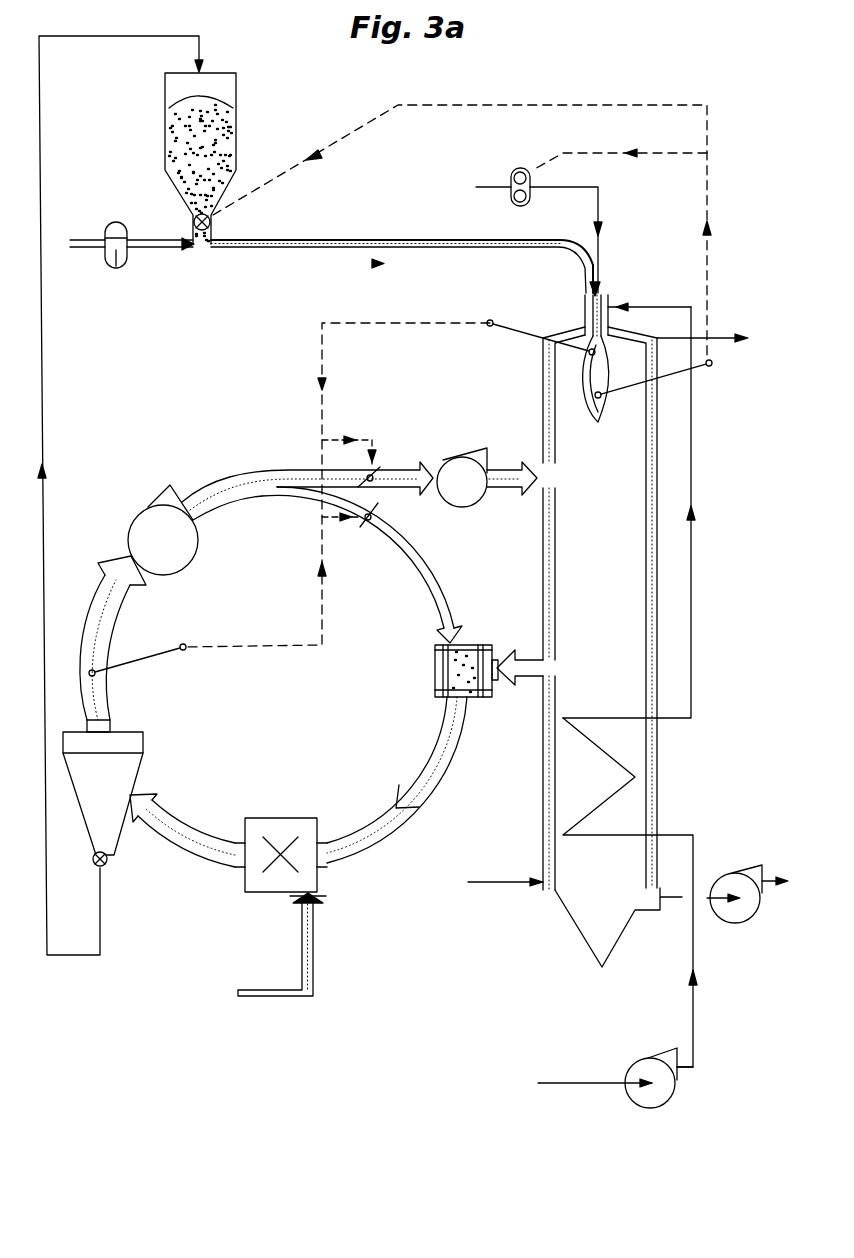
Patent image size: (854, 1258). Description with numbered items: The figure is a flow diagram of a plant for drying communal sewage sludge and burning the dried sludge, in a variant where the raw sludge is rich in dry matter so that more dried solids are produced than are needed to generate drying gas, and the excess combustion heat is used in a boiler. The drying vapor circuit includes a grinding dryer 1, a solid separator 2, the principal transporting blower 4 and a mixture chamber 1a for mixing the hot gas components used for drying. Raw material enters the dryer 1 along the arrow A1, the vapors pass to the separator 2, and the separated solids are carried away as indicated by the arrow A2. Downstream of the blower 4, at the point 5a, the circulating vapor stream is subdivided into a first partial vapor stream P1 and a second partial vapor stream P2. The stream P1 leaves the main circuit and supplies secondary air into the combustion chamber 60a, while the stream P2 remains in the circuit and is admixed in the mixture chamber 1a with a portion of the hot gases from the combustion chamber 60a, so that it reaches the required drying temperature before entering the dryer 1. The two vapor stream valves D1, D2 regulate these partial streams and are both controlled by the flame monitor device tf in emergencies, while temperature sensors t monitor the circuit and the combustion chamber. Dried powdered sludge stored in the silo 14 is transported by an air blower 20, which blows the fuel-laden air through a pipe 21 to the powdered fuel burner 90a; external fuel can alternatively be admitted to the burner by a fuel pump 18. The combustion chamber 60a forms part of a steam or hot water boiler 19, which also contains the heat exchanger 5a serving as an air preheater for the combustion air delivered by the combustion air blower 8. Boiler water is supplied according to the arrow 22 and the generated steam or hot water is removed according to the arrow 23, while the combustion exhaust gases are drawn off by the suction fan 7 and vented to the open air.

The grinding dryer 1 is at (278, 826).
The mixture chamber 1a is at (437, 665).
The solid separator 2 is at (130, 765).
The principal transporting blower 4 is at (170, 565).
The heat exchanger 5a is at (608, 718).
The suction fan 7 is at (730, 882).
The combustion air blower 8 is at (640, 1068).
The silo 14 is at (236, 125).
The fuel pump 18 is at (540, 196).
The steam or hot water boiler 19 is at (664, 594).
The air blower 20 is at (124, 222).
The pipe 21 is at (392, 240).
The boiler water supply arrow 22 is at (496, 882).
The steam or hot water outlet arrow 23 is at (715, 338).
The combustion chamber 60a is at (655, 643).
The powdered fuel burner 90a is at (592, 312).
The sludge feed arrow A1 is at (268, 986).
The separated solids removal arrow A2 is at (72, 955).
The vapor stream valve D1 is at (373, 465).
The vapor stream valve D2 is at (376, 507).
The first partial vapor stream P1 is at (403, 470).
The second partial vapor stream P2 is at (420, 565).
The temperature sensor t is at (409, 516).
The flame monitor device tf is at (490, 328).